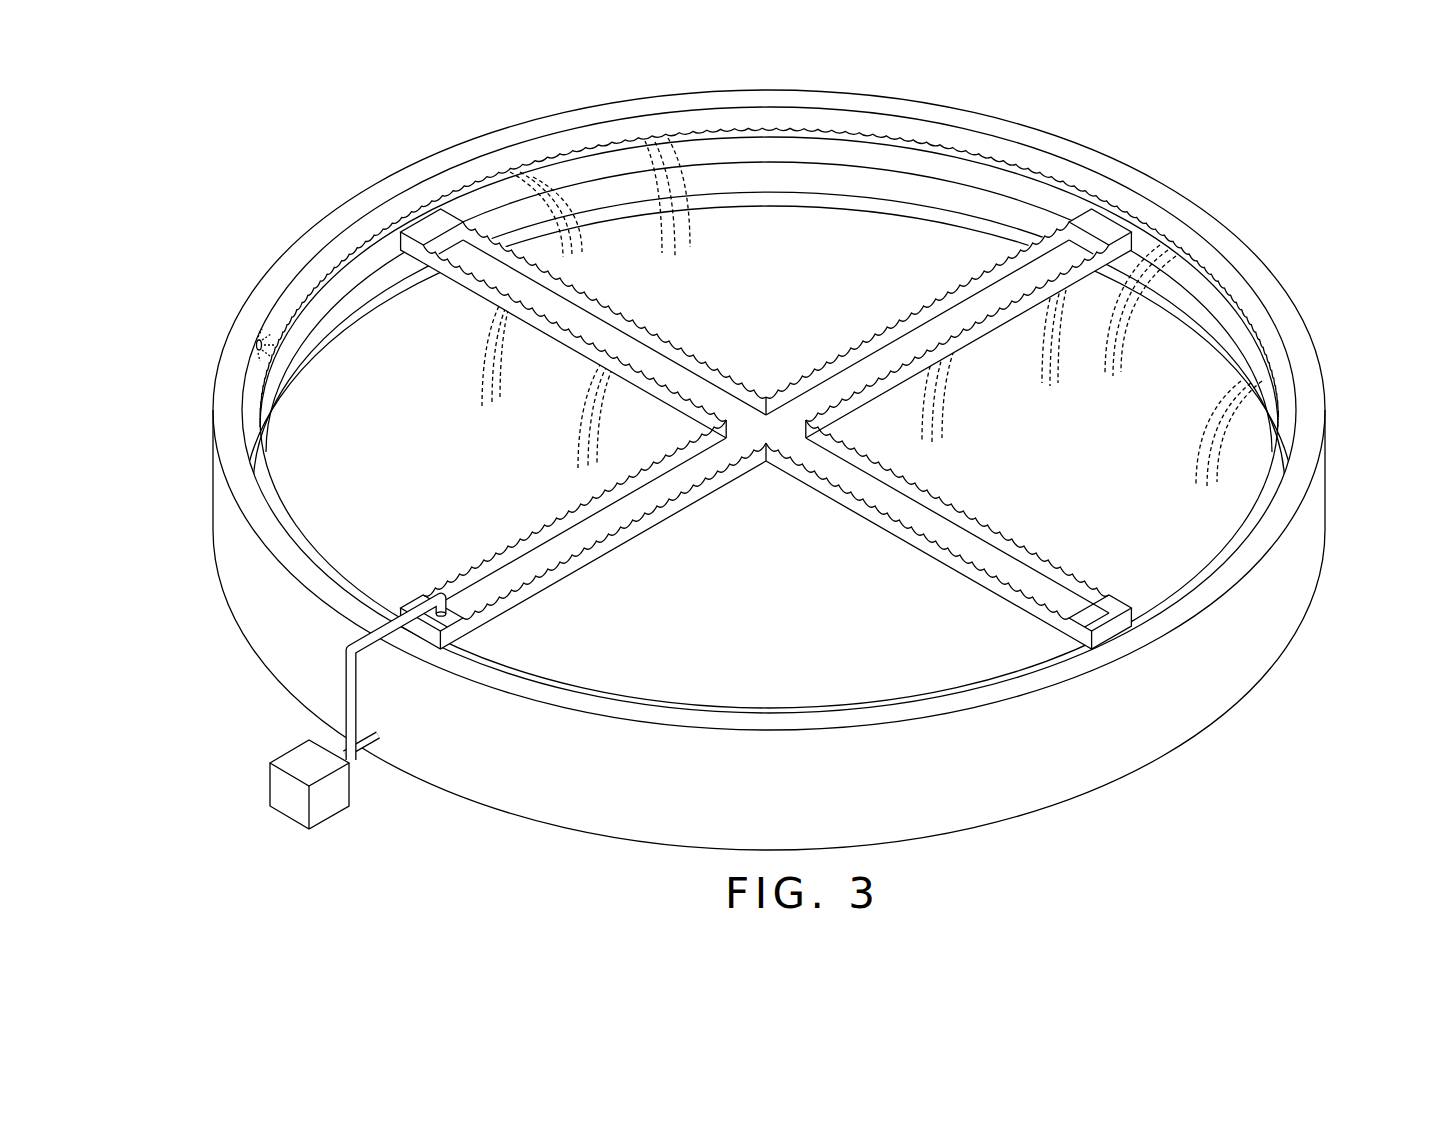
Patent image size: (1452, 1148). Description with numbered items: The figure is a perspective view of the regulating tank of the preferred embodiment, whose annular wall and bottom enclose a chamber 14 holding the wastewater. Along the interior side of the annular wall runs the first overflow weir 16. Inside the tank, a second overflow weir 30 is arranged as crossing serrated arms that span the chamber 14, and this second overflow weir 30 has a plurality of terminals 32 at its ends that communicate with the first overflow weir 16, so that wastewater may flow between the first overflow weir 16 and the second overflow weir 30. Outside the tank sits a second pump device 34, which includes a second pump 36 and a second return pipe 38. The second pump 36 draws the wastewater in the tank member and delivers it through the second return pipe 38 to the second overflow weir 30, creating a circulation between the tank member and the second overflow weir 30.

The chamber 14 is at (1175, 518).
The first overflow weir 16 is at (1093, 188).
The second overflow weir 30 is at (889, 477).
The terminals 32 is at (1112, 232).
The second pump device 34 is at (282, 745).
The second pump 36 is at (290, 803).
The second return pipe 38 is at (350, 688).